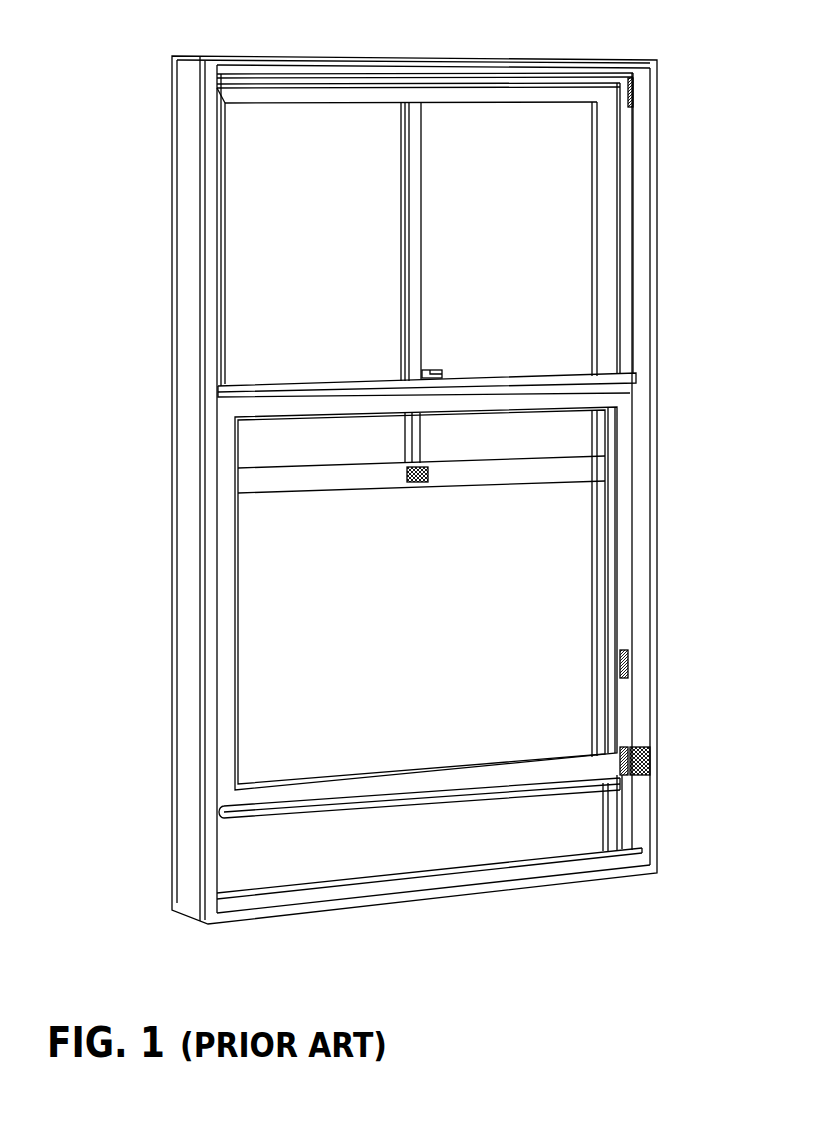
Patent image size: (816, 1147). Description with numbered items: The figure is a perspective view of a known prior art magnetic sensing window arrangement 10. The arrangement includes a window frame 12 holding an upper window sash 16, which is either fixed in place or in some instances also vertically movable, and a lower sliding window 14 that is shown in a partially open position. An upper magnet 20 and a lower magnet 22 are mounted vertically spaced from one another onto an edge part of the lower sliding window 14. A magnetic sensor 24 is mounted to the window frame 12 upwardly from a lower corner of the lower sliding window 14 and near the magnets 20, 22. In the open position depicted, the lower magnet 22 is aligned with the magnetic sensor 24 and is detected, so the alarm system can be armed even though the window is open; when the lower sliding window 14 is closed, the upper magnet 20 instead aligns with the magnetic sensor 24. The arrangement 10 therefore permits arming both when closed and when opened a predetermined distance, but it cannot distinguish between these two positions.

The magnetic sensing window arrangement 10 is at (92, 753).
The window frame 12 is at (642, 832).
The lower sliding window 14 is at (243, 390).
The upper window sash 16 is at (326, 94).
The upper magnet 20 is at (620, 663).
The lower magnet 22 is at (620, 764).
The magnetic sensor 24 is at (652, 756).